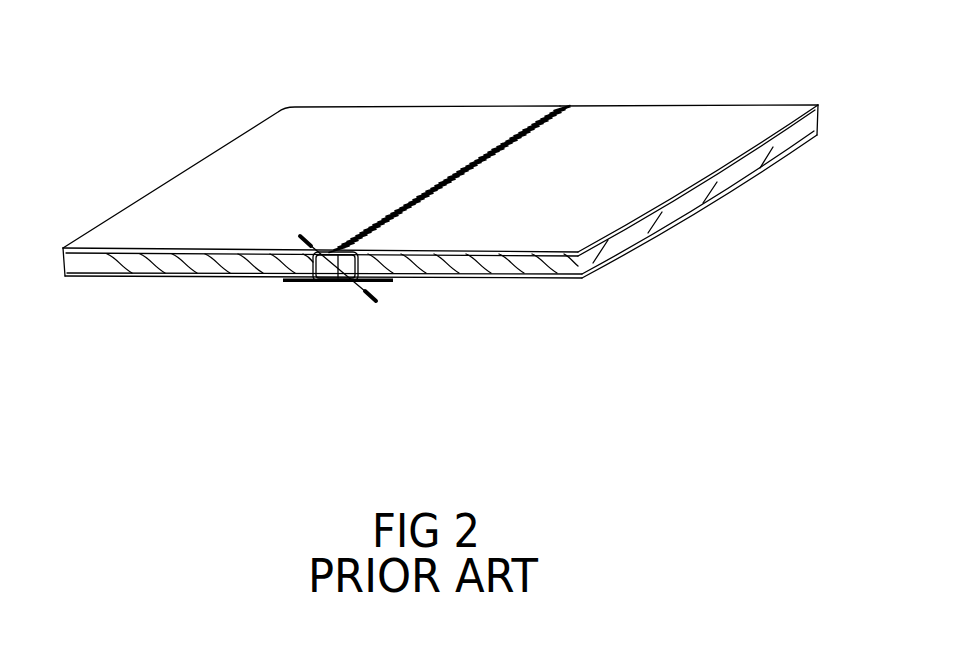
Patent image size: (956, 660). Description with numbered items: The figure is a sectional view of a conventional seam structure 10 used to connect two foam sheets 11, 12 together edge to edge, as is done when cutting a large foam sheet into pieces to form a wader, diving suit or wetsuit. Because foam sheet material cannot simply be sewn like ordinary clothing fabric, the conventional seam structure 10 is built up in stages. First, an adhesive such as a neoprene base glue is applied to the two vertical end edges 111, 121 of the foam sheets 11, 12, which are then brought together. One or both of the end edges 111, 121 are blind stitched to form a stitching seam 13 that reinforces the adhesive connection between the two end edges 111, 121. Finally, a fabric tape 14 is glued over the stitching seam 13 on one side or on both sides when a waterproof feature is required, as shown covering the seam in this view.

The seam structure 10 is at (307, 291).
The foam sheet 11 is at (397, 137).
The foam sheet 12 is at (675, 130).
The stitching seam 13 is at (535, 107).
The fabric tape 14 is at (349, 283).
The vertical end edge 111 is at (303, 238).
The vertical end edge 121 is at (375, 300).